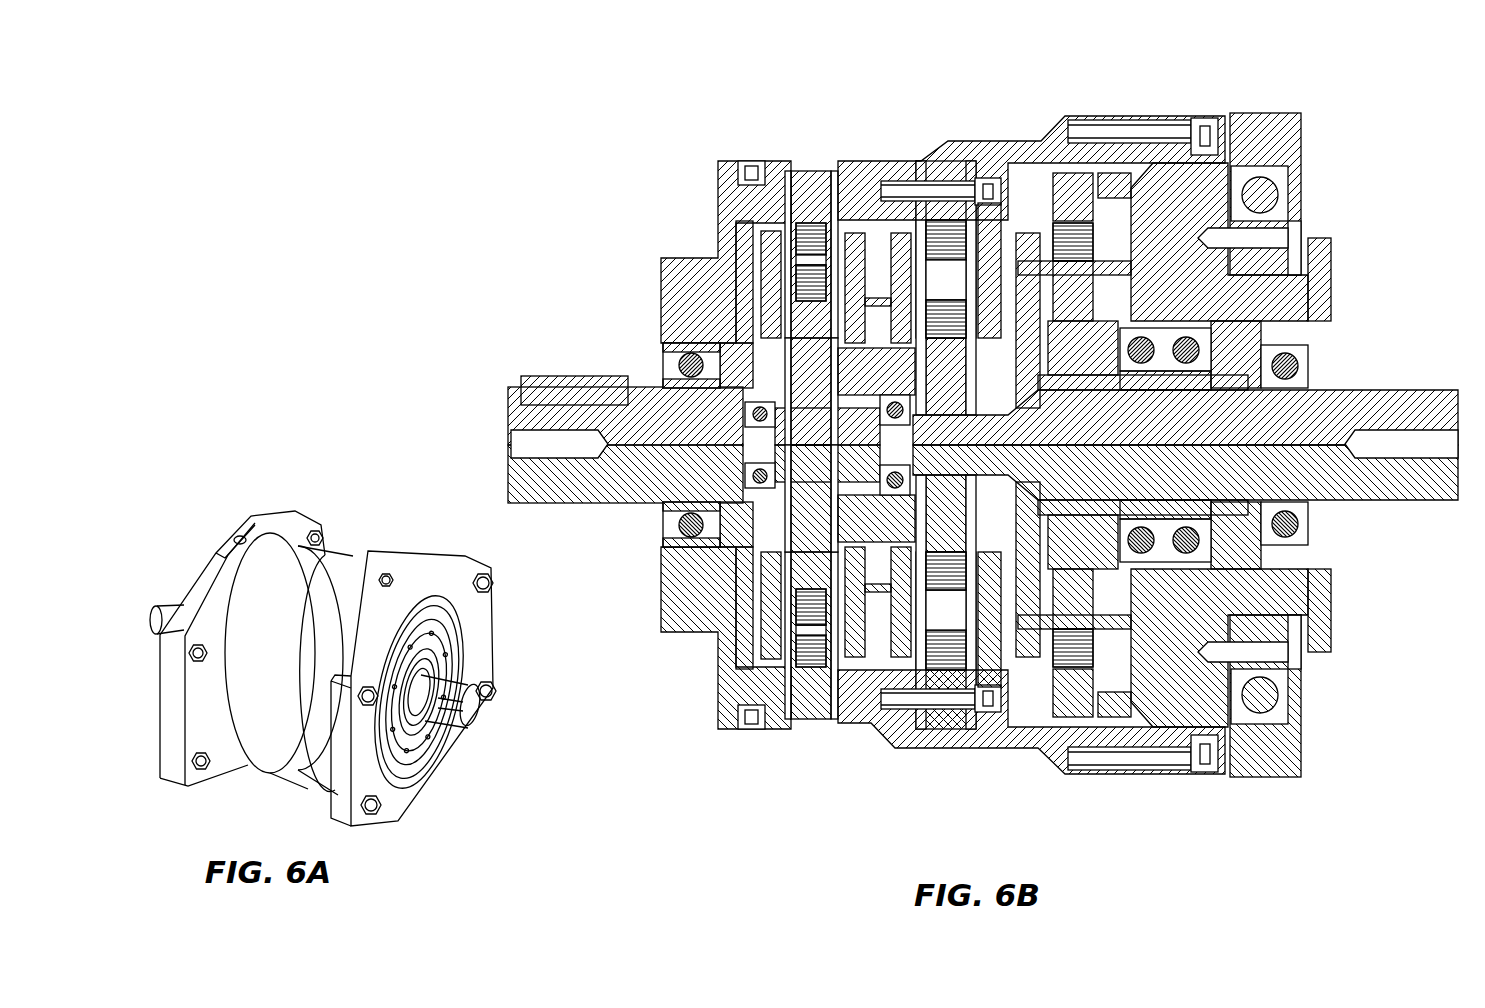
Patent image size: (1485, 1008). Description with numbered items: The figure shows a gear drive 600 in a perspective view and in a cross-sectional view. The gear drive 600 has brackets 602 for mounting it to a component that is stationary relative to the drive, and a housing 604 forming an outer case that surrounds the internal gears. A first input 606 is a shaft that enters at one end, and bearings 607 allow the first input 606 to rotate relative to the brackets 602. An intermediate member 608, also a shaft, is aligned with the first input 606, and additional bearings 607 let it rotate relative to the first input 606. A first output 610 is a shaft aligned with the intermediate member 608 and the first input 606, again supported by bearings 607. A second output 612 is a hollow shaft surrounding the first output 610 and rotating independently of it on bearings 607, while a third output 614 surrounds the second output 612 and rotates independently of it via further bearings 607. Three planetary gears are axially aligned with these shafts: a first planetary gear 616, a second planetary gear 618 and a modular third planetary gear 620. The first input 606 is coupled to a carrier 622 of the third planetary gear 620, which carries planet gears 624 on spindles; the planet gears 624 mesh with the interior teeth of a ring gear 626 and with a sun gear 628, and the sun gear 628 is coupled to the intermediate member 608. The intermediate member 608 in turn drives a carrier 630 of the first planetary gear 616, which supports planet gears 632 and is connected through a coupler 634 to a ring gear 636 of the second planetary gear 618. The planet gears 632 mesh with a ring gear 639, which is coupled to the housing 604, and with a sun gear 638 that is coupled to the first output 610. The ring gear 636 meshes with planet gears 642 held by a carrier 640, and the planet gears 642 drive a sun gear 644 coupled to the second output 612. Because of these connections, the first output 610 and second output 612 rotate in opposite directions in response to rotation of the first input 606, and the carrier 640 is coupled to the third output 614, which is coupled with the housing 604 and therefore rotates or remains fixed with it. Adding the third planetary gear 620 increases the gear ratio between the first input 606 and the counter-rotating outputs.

In FIG. 6B, the gear drive 600 is at (596, 55).
In FIG. 6A, the gear drive 600 is at (165, 458).
In FIG. 6B, the brackets 602 is at (1007, 428).
In FIG. 6A, the brackets 602 is at (294, 696).
In FIG. 6B, the housing 604 is at (1031, 407).
In FIG. 6B, the first input 606 is at (649, 439).
In FIG. 6A, the first input 606 is at (148, 585).
In FIG. 6B, the bearings 607 is at (927, 473).
In FIG. 6B, the intermediate member 608 is at (634, 428).
In FIG. 6B, the first output 610 is at (1192, 408).
In FIG. 6A, the first output 610 is at (469, 750).
In FIG. 6B, the second output 612 is at (1277, 445).
In FIG. 6B, the third output 614 is at (1359, 428).
In FIG. 6B, the first planetary gear 616 is at (935, 374).
In FIG. 6B, the second planetary gear 618 is at (1143, 403).
In FIG. 6B, the third planetary gear 620 is at (793, 385).
In FIG. 6B, the carrier 622 is at (663, 445).
In FIG. 6B, the planet gears 624 is at (662, 425).
In FIG. 6B, the ring gear 626 is at (800, 564).
In FIG. 6B, the sun gear 628 is at (665, 469).
In FIG. 6B, the carrier 630 is at (869, 514).
In FIG. 6B, the planet gears 632 is at (1002, 522).
In FIG. 6B, the coupler 634 is at (1048, 529).
In FIG. 6B, the ring gear 636 is at (1143, 580).
In FIG. 6B, the sun gear 638 is at (902, 571).
In FIG. 6B, the ring gear 639 is at (946, 493).
In FIG. 6B, the carrier 640 is at (1117, 506).
In FIG. 6B, the planet gears 642 is at (1268, 500).
In FIG. 6B, the sun gear 644 is at (1301, 463).